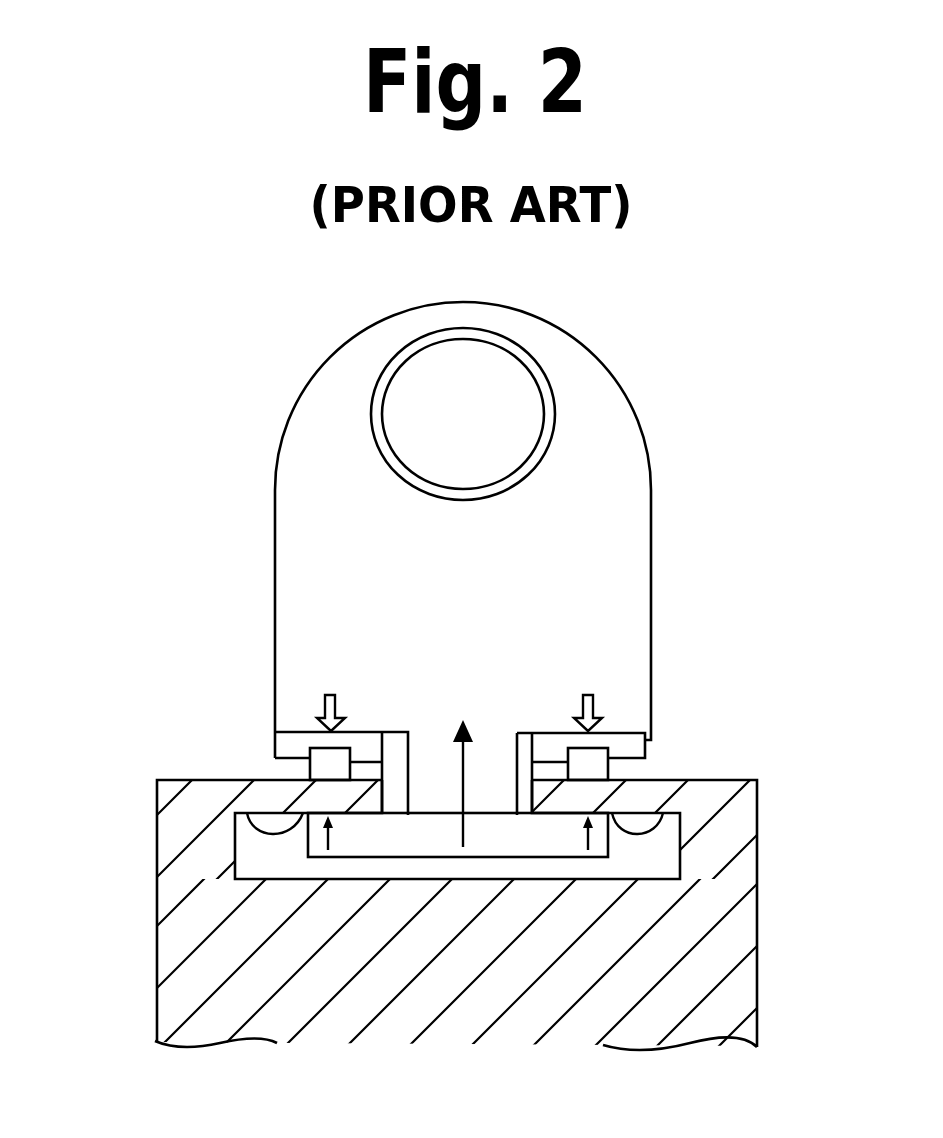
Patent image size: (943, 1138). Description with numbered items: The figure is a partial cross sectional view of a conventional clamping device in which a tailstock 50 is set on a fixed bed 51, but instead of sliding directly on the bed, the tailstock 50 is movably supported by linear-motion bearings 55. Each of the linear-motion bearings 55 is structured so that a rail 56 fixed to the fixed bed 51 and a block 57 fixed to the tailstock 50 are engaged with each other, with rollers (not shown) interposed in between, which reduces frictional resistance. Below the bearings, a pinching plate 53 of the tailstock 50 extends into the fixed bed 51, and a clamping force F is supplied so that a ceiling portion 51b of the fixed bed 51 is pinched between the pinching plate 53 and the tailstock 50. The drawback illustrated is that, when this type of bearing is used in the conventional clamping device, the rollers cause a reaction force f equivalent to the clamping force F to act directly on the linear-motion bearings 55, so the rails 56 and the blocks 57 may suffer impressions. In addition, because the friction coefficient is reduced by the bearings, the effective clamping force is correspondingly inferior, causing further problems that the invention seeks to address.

The tailstock 50 is at (316, 396).
The fixed bed 51 is at (158, 848).
The ceiling portion 51b is at (250, 815).
The pinching plate 53 is at (548, 858).
The linear-motion bearings 55 is at (459, 735).
The rails 56 is at (310, 768).
The blocks 57 is at (275, 748).
The clamping force F is at (467, 778).
The reaction force f is at (338, 716).